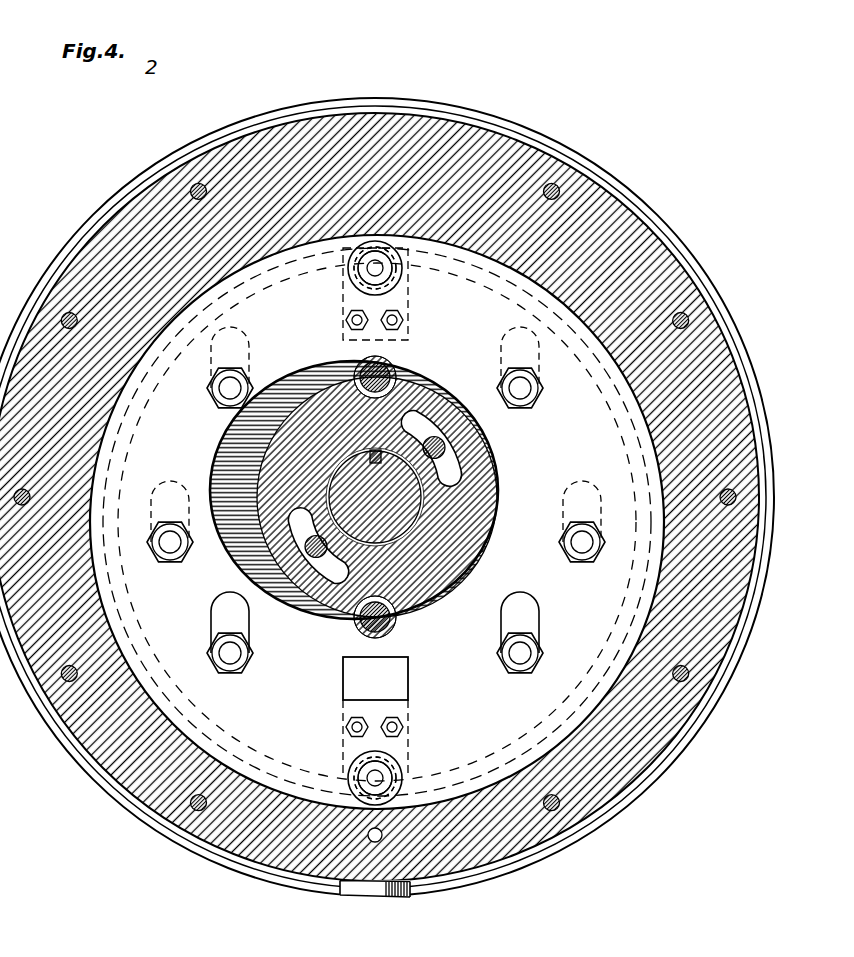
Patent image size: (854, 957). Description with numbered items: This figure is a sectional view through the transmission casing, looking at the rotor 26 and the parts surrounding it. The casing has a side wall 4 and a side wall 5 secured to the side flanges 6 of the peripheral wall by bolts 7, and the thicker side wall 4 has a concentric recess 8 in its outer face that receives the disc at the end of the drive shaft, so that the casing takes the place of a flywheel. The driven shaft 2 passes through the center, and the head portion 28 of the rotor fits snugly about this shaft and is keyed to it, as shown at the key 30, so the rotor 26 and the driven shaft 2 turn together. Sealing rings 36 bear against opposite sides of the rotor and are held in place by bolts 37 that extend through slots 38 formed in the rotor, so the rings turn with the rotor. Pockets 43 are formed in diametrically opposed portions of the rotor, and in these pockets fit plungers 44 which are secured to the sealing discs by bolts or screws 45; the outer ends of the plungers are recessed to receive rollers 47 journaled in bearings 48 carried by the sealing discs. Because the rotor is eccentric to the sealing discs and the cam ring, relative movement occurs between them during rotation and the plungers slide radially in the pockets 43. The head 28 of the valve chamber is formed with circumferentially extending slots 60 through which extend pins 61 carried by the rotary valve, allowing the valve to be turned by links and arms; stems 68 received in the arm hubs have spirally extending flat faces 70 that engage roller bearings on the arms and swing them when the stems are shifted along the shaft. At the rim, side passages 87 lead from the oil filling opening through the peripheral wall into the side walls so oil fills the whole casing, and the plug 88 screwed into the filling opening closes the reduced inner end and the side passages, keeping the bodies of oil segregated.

The driven shaft 2 is at (403, 531).
The side wall 4 is at (457, 105).
The side wall 5 is at (517, 133).
The side flanges 6 is at (576, 165).
The bolts 7 is at (560, 186).
The concentric recess 8 is at (482, 503).
The rotor 26 is at (520, 482).
The head portion of the rotor 28 is at (486, 518).
The key 30 is at (370, 452).
The sealing rings 36 is at (377, 522).
The bolts 37 is at (228, 392).
The slots 38 is at (506, 592).
The pockets 43 is at (410, 284).
The plungers 44 is at (364, 289).
The bolts or screws 45 is at (404, 321).
The rollers 47 is at (360, 279).
The bearings 48 is at (372, 266).
The circumferentially extending slots 60 is at (458, 472).
The pins 61 is at (445, 447).
The stems 68 is at (388, 370).
The spirally extending flat faces 70 is at (364, 368).
The side passages 87 is at (372, 843).
The plug 88 is at (393, 899).